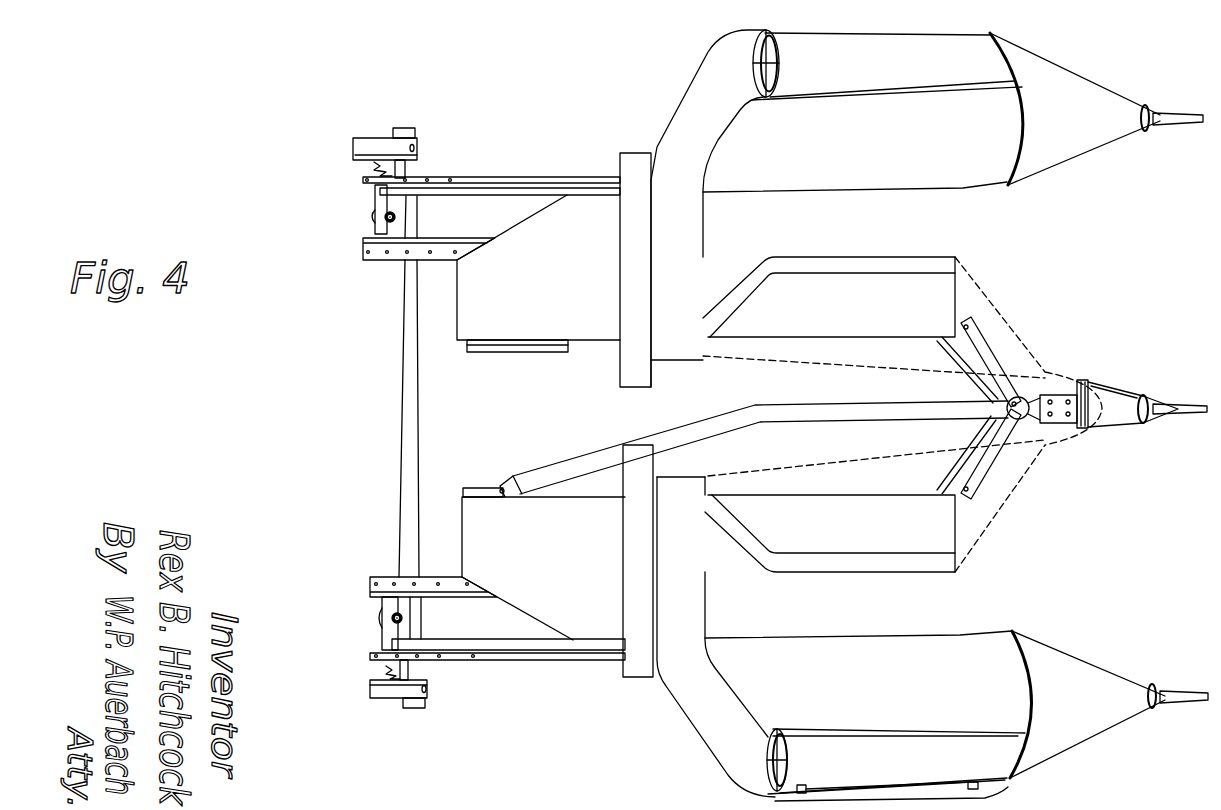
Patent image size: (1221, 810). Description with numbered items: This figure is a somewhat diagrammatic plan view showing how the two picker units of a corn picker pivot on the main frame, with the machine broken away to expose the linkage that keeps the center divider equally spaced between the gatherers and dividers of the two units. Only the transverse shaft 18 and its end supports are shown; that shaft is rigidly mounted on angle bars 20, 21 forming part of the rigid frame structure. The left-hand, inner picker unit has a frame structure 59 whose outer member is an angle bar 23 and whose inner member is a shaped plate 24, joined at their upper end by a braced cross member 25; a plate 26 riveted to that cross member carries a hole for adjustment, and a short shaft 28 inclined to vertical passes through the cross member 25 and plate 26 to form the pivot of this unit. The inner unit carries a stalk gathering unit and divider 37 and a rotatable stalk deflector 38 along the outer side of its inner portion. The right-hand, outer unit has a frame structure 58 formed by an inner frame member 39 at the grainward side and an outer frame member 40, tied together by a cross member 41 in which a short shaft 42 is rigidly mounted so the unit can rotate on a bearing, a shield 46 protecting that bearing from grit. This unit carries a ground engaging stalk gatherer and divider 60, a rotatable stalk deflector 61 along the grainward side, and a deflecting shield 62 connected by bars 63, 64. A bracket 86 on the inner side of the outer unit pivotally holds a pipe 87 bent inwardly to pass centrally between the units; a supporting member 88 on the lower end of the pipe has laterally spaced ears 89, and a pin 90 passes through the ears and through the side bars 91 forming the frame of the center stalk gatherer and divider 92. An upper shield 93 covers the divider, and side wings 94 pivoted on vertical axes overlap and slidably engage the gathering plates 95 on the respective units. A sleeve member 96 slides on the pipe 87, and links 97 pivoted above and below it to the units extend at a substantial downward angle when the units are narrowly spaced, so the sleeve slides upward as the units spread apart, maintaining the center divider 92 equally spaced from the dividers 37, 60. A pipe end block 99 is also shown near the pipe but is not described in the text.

The transverse shaft 18 is at (400, 548).
The angle bar 20 is at (367, 143).
The angle bar 21 is at (418, 165).
The angle bar 23 is at (443, 249).
The shaped plate 24 is at (480, 177).
The cross member 25 is at (380, 231).
The plate 26 is at (372, 212).
The short shaft 28 is at (400, 215).
The stalk gathering unit and divider 37 is at (1103, 93).
The rotatable stalk deflector 38 is at (783, 42).
The inner frame member 39 is at (452, 578).
The outer frame member 40 is at (497, 664).
The cross member 41 is at (387, 633).
The short shaft 42 is at (404, 618).
The shield 46 is at (387, 617).
The frame structure 58 is at (607, 617).
The frame structure 59 is at (577, 203).
The ground engaging stalk gatherer and divider 60 is at (1100, 673).
The rotatable stalk deflector 61 is at (855, 740).
The deflecting shield 62 is at (920, 793).
The bar 63 is at (807, 790).
The bar 64 is at (972, 786).
The bracket 86 is at (488, 487).
The pipe 87 is at (702, 427).
The supporting member 88 is at (1063, 395).
The ears 89 is at (1128, 392).
The pin 90 is at (1077, 432).
The side bars 91 is at (1157, 390).
The center stalk gatherer and divider 92 is at (1168, 401).
The upper shield 93 is at (1125, 425).
The side wings 94 is at (1092, 381).
The gathering plates 95 is at (1005, 330).
The sleeve member 96 is at (1018, 396).
The links 97 is at (990, 416).
The pipe end block 99 is at (643, 465).